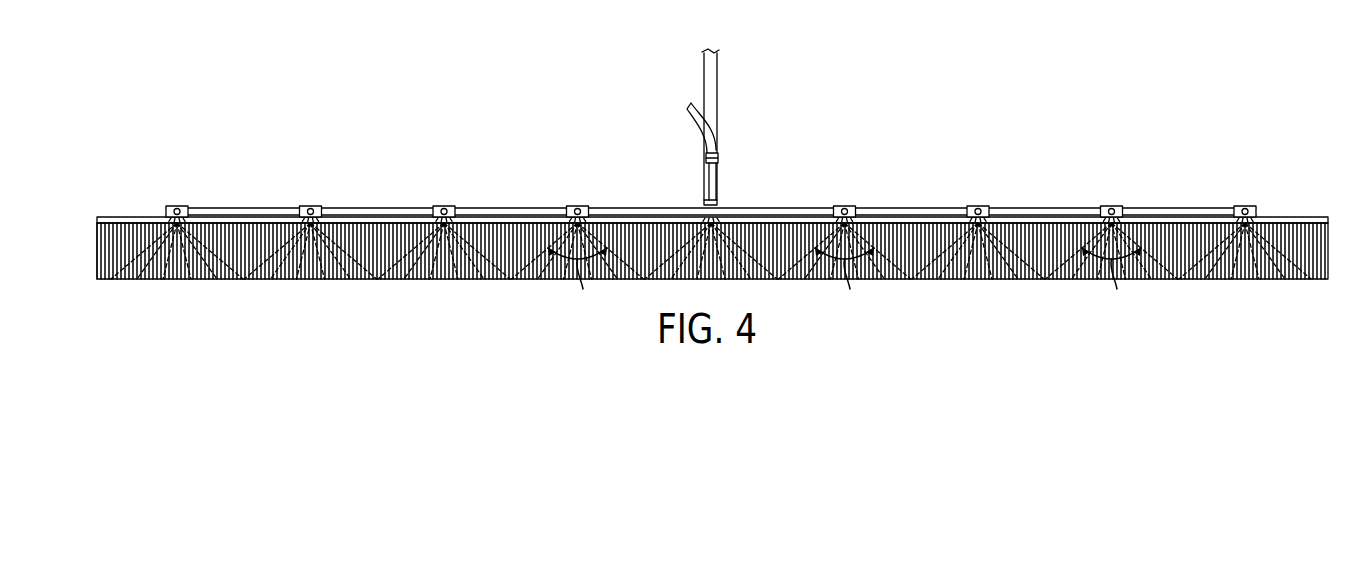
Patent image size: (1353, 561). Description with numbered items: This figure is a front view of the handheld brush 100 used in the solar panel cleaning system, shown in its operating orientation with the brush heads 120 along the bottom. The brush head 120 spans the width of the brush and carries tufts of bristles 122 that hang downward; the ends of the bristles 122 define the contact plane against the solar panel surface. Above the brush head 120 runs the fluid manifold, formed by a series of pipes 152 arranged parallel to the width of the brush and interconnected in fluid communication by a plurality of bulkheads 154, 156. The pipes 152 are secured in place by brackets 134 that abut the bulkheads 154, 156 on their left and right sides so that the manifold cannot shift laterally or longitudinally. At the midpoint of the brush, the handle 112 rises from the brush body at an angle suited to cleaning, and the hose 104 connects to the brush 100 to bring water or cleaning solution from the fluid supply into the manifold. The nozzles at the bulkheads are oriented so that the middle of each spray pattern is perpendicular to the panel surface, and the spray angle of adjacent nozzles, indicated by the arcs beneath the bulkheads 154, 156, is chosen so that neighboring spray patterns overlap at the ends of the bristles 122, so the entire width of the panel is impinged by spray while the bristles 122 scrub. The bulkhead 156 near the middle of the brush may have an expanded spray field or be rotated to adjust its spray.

The brush 100 is at (705, 187).
The hose 104 is at (691, 118).
The handle 112 is at (718, 103).
The brush head 120 is at (92, 222).
The bristles 122 is at (100, 252).
The bracket 134 is at (306, 209).
The pipes 152 is at (512, 208).
The bulkhead 154 is at (718, 184).
The bulkhead 156 is at (975, 208).